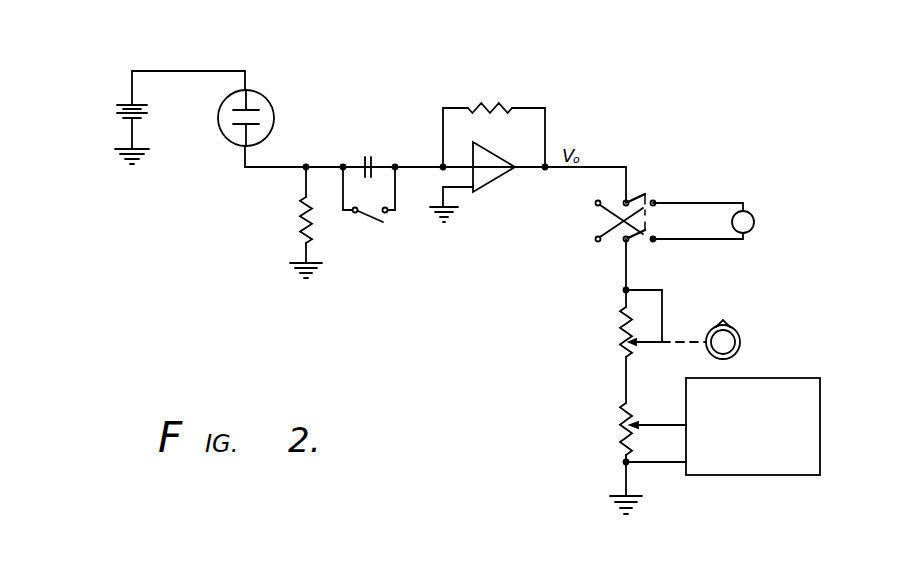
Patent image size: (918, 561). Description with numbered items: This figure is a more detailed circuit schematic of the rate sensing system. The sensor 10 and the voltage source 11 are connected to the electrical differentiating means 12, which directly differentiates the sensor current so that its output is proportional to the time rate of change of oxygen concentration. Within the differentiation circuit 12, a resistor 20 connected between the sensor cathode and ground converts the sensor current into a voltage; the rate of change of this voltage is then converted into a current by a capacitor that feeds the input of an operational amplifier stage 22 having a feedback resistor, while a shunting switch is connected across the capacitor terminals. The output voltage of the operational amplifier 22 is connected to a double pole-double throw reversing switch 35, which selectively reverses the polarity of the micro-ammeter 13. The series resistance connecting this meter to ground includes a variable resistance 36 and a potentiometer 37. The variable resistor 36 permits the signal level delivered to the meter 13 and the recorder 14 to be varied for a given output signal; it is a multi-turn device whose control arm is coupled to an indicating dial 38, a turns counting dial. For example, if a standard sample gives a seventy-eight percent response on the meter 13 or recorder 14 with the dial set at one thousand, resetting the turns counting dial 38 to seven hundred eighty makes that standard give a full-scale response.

The sensor 10 is at (267, 100).
The voltage source 11 is at (120, 110).
The differentiation circuit 12 is at (369, 140).
The micro-ammeter 13 is at (755, 221).
The recorder 14 is at (763, 477).
The resistor 20 is at (300, 218).
The operational amplifier stage 22 is at (486, 185).
The double pole-double throw reversing switch 35 is at (645, 187).
The variable resistance 36 is at (620, 322).
The potentiometer 37 is at (620, 437).
The indicating dial 38 is at (742, 336).